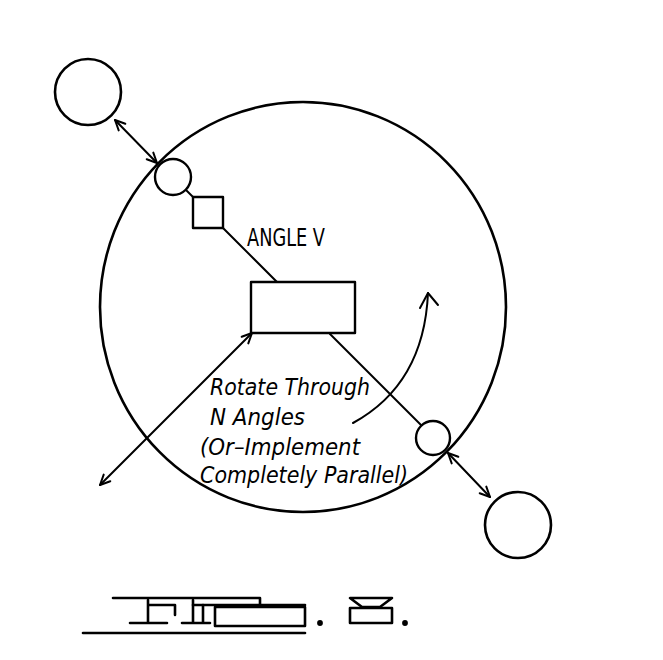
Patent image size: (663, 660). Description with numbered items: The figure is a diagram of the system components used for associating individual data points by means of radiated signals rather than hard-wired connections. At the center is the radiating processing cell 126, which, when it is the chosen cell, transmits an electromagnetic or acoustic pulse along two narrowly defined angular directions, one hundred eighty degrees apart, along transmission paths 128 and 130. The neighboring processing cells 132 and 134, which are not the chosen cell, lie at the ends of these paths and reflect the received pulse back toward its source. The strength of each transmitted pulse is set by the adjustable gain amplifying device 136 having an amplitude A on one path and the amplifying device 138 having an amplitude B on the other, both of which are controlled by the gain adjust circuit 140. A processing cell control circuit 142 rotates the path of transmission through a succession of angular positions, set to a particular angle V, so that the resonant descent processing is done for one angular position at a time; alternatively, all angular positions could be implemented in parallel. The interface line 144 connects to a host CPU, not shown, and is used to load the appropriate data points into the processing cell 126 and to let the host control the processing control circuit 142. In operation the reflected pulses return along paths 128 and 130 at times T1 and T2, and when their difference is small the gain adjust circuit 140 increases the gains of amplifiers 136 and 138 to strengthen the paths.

The radiating processing cell 126 is at (465, 181).
The transmission path 128 is at (143, 137).
The transmission path 130 is at (470, 470).
The processing cell 132 is at (548, 508).
The processing cell 134 is at (113, 68).
The adjustable gain amplifying device 136 is at (190, 168).
The amplifying device 138 is at (441, 421).
The gain adjust circuit 140 is at (225, 205).
The processing cell control circuit 142 is at (343, 290).
The interface line 144 is at (128, 457).